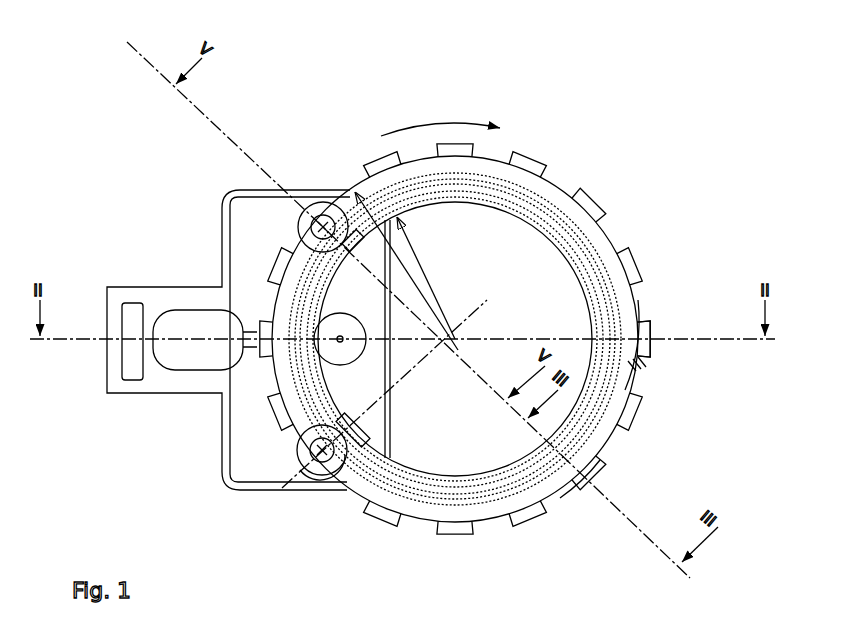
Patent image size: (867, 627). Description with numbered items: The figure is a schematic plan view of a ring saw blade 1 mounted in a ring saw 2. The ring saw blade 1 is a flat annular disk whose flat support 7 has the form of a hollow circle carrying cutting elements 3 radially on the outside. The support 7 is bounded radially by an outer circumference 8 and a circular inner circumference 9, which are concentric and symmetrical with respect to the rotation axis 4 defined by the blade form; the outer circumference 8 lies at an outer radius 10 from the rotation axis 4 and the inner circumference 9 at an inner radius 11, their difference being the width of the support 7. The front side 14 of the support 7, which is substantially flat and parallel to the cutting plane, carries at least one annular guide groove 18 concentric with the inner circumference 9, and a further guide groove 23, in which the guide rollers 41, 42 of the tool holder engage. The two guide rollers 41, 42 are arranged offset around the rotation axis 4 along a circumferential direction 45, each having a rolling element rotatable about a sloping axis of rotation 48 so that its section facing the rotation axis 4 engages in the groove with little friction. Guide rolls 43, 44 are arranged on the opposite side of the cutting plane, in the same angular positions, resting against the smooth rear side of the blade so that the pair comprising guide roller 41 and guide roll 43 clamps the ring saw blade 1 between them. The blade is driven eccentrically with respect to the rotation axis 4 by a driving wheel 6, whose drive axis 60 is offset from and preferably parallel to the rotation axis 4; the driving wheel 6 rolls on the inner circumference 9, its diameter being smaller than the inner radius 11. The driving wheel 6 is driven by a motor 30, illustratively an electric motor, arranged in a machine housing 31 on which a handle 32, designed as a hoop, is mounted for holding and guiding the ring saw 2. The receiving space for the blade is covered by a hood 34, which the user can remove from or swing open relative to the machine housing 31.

The ring saw blade 1 is at (630, 128).
The ring saw 2 is at (146, 133).
The cutting elements 3 is at (602, 202).
The rotation axis 4 is at (562, 318).
The driving wheel 6 is at (336, 344).
The support 7 is at (590, 455).
The outer circumference 8 is at (640, 316).
The inner circumference 9 is at (655, 325).
The outer radius 10 is at (427, 291).
The inner radius 11 is at (447, 314).
The front side 14 is at (630, 367).
The guide groove 18 is at (590, 412).
The guide groove 23 is at (590, 432).
The motor 30 is at (207, 337).
The machine housing 31 is at (155, 307).
The handle 32 is at (108, 330).
The hood 34 is at (226, 468).
The guide roller 41 is at (320, 453).
The guide roller 42 is at (322, 226).
The guide roll 43 is at (347, 467).
The guide roll 44 is at (330, 200).
The circumferential direction 45 is at (455, 122).
The axis of rotation 48 is at (336, 462).
The drive axis 60 is at (340, 336).